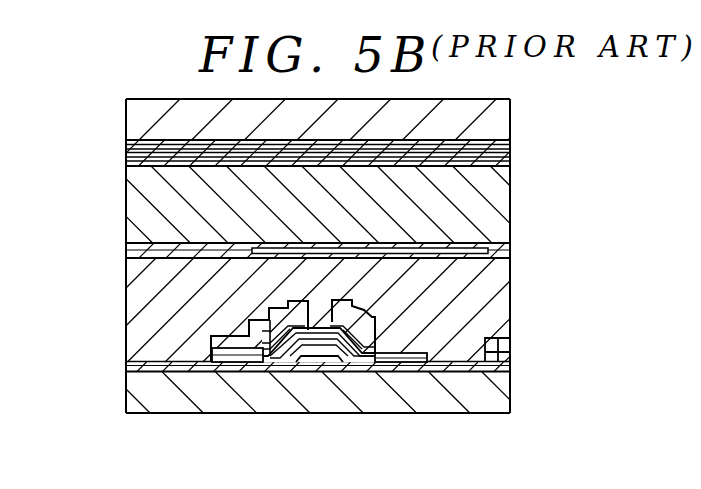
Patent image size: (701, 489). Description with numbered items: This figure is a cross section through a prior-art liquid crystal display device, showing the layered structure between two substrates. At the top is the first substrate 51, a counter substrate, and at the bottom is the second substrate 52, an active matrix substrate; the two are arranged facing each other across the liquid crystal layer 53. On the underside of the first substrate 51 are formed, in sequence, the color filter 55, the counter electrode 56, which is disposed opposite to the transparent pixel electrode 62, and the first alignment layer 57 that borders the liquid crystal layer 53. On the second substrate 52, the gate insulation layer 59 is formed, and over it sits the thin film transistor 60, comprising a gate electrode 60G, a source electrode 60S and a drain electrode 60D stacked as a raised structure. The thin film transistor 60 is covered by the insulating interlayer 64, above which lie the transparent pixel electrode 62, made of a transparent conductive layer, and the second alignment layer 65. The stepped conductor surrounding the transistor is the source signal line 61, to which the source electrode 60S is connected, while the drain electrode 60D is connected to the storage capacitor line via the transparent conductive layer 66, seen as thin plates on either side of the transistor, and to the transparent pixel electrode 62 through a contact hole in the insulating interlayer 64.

The first substrate 51 is at (457, 107).
The color filter 55 is at (510, 140).
The counter electrode 56 is at (510, 150).
The first alignment layer 57 is at (510, 160).
The liquid crystal layer 53 is at (135, 195).
The second alignment layer 65 is at (510, 251).
The transparent pixel electrode 62 is at (483, 259).
The insulating interlayer 64 is at (510, 300).
The source signal line 61 is at (212, 337).
The gate insulation layer 59 is at (510, 366).
The second substrate 52 is at (510, 390).
The transparent conductive layer 66 is at (222, 366).
The thin film transistor 60 is at (287, 373).
The source electrode 60S is at (260, 373).
The gate electrode 60G is at (318, 373).
The drain electrode 60D is at (363, 373).